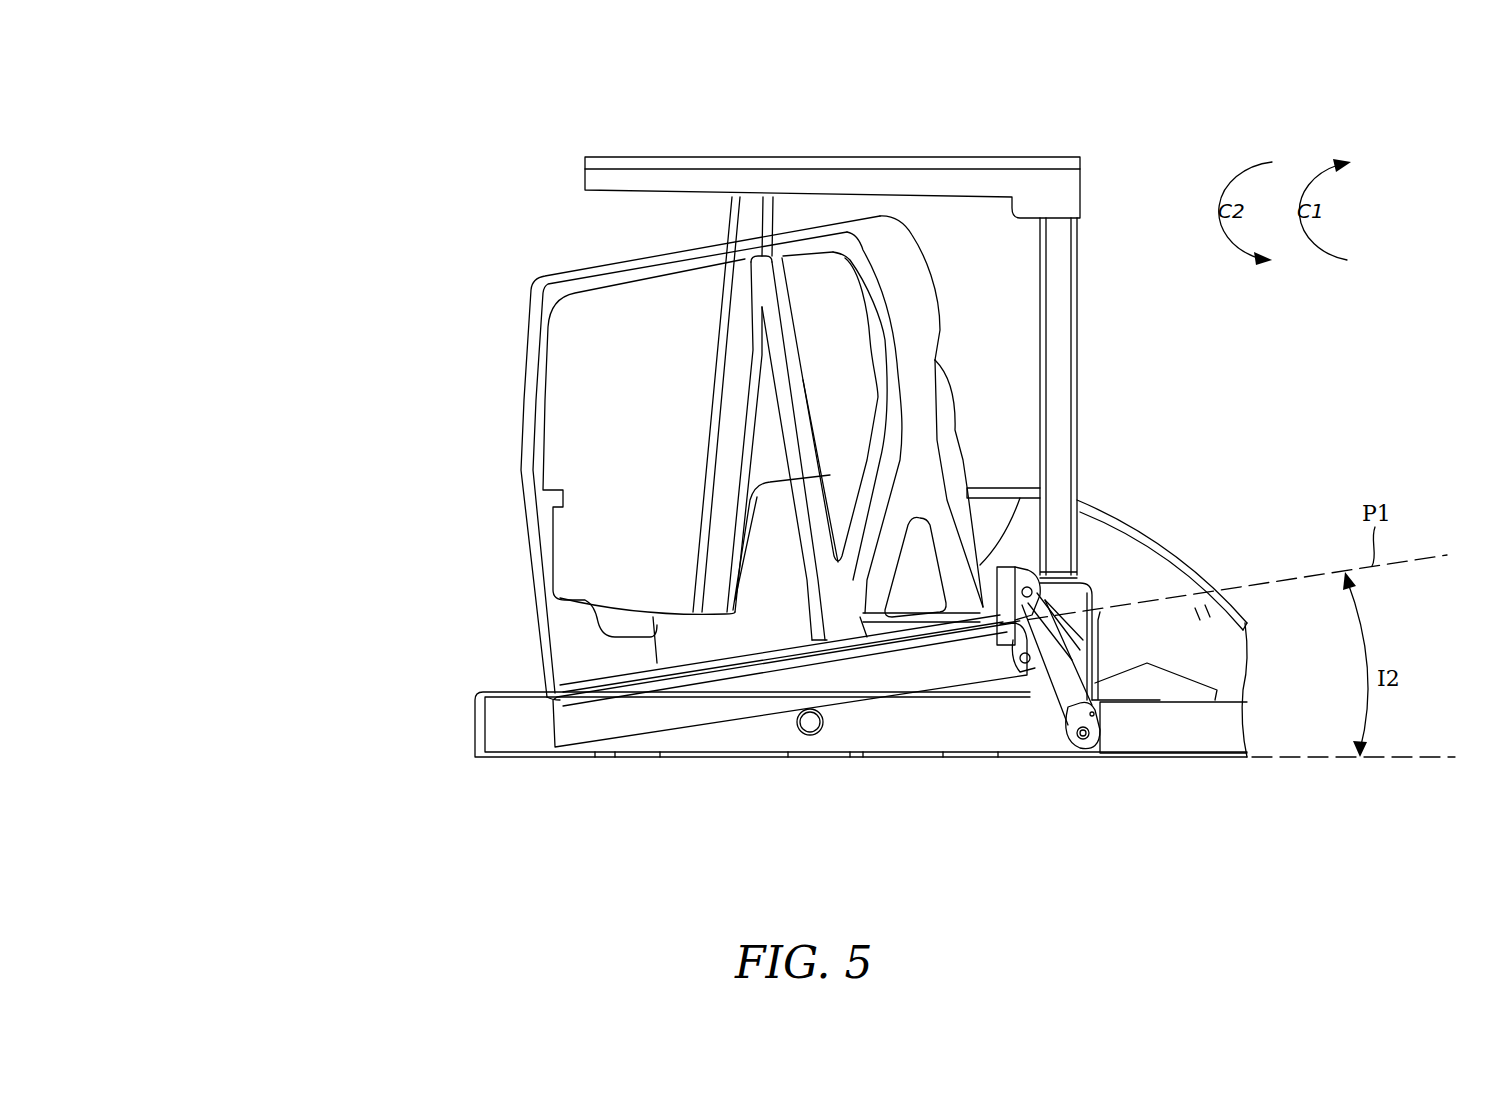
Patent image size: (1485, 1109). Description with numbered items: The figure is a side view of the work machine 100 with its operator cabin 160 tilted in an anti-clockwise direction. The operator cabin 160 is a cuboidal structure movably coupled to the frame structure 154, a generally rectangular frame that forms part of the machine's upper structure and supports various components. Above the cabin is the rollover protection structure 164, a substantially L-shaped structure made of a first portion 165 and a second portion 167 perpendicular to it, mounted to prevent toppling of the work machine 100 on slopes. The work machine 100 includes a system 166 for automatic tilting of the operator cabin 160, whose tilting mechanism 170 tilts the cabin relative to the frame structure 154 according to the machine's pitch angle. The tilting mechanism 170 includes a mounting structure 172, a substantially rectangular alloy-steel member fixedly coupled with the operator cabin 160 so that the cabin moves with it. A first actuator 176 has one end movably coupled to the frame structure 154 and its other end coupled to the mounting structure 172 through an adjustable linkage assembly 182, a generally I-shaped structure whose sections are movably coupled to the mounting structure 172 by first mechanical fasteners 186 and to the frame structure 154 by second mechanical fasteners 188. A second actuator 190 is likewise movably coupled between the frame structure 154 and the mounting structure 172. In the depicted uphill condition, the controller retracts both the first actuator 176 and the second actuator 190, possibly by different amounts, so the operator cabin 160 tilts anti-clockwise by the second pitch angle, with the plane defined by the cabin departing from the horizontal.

The work machine 100 is at (236, 114).
The frame structure 154 is at (1205, 727).
The operator cabin 160 is at (533, 325).
The rollover protection structure 164 is at (940, 168).
The first portion 165 is at (806, 176).
The system for automatic tilting of the operator cabin 166 is at (874, 722).
The second portion 167 is at (1060, 440).
The tilting mechanism 170 is at (1022, 720).
The mounting structure 172 is at (573, 710).
The first actuator 176 is at (1205, 670).
The adjustable linkage assembly 182 is at (1085, 680).
The first mechanical fasteners 186 is at (1043, 632).
The second mechanical fasteners 188 is at (1090, 733).
The second actuator 190 is at (1067, 727).